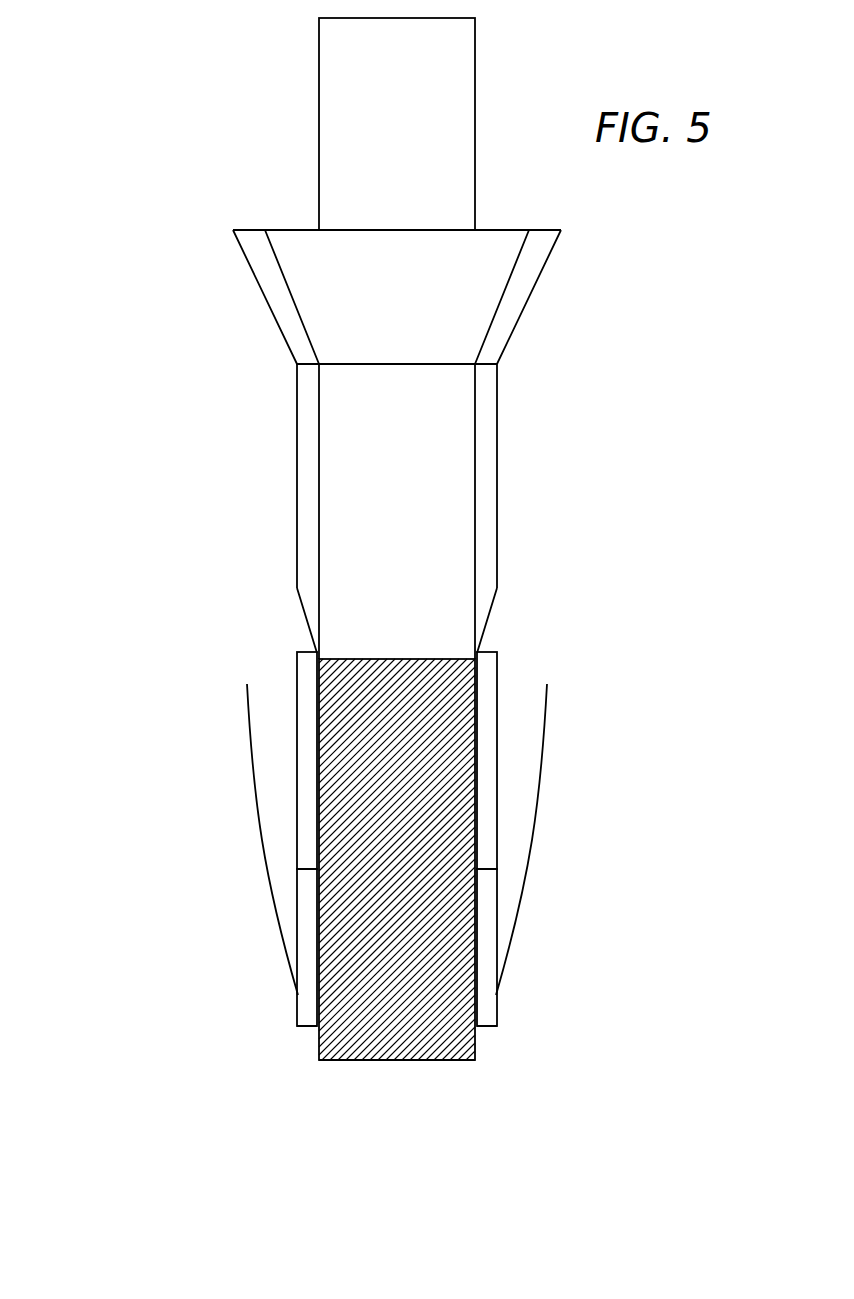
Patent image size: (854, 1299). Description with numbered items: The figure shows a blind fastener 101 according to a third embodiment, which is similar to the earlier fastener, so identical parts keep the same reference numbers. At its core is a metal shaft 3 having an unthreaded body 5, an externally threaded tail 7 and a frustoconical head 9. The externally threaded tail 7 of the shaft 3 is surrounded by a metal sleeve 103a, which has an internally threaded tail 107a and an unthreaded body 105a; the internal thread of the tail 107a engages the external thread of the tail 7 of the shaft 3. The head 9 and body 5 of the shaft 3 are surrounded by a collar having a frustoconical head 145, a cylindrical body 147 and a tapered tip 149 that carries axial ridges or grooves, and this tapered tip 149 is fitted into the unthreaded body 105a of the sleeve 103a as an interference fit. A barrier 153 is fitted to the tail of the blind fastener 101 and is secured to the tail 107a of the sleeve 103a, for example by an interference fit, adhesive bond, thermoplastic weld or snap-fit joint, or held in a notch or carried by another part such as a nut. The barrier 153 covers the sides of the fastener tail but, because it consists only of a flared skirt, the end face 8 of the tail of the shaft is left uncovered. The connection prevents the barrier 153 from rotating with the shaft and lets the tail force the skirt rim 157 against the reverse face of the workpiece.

The blind fastener 101 is at (175, 210).
The metal shaft 3 is at (288, 217).
The body 5 is at (438, 430).
The externally threaded tail 7 is at (432, 790).
The end face 8 is at (418, 1062).
The frustoconical head 9 is at (465, 315).
The frustoconical head 145 is at (277, 298).
The cylindrical body 147 is at (303, 500).
The tapered tip 149 is at (305, 627).
The barrier 153 is at (256, 811).
The skirt rim 157 is at (547, 684).
The metal sleeve 103a is at (305, 1038).
The unthreaded body 105a is at (305, 733).
The internally threaded tail 107a is at (486, 1007).